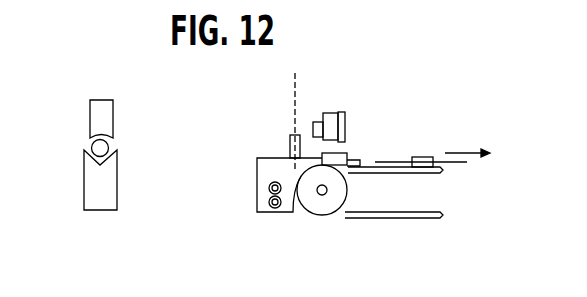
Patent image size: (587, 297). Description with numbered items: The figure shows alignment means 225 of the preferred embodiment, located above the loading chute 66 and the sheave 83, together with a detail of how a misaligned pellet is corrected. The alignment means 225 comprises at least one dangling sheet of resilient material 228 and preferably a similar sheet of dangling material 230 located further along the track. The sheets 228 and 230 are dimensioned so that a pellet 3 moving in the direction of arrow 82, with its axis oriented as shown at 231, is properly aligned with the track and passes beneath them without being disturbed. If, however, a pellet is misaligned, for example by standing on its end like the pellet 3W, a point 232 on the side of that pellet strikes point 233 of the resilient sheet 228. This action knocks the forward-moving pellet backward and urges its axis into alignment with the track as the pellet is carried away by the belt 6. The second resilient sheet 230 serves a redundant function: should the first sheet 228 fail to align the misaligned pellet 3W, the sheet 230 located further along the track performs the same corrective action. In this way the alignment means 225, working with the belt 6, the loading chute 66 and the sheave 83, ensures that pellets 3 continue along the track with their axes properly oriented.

The pellet 3 is at (105, 147).
The misaligned pellet 3W is at (290, 147).
The belt 6 is at (383, 173).
The loading chute 66 is at (100, 188).
The arrow 82 is at (467, 152).
The sheave 83 is at (327, 207).
The alignment means 225 is at (78, 118).
The dangling sheet of resilient material 228 is at (105, 105).
The sheet of dangling material 230 is at (343, 120).
The pellet axis orientation 231 is at (453, 165).
The point on side of pellet 232 is at (297, 135).
The point of resilient sheet 233 is at (90, 140).